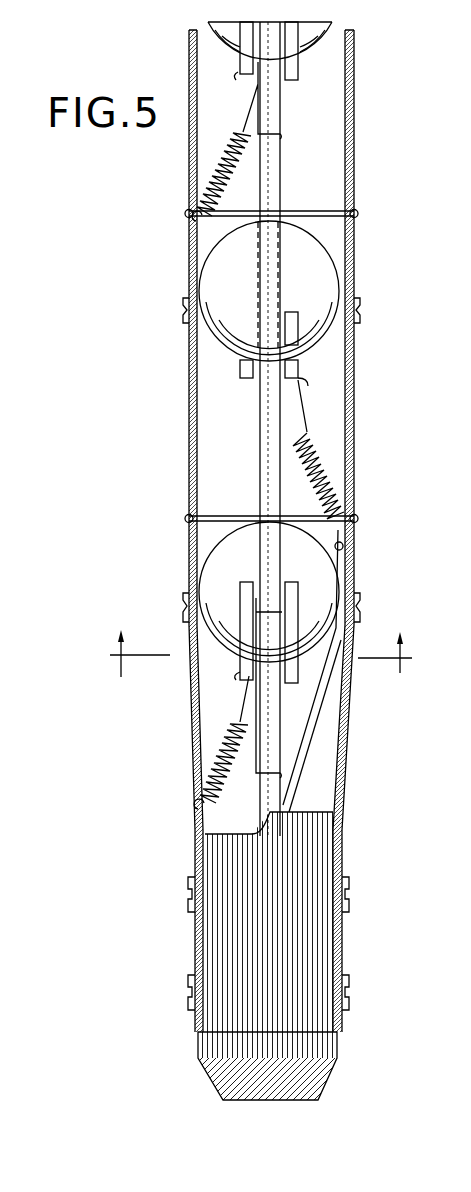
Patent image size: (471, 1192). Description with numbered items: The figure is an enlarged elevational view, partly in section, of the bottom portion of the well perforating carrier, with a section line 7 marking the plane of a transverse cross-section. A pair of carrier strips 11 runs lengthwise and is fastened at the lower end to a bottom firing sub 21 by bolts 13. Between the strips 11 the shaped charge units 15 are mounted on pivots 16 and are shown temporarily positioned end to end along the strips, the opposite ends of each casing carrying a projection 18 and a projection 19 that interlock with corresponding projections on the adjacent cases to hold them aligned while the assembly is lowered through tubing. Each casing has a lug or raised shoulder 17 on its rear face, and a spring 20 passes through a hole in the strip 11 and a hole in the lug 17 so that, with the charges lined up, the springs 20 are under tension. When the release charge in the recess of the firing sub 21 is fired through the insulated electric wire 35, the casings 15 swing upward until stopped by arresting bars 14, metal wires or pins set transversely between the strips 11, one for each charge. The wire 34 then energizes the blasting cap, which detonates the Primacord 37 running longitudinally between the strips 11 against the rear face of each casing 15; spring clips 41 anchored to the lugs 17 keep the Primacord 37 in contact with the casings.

The section line 7 is at (261, 653).
The carrier strips 11 is at (354, 125).
The bolts 13 is at (188, 906).
The arresting bars 14 is at (325, 212).
The shaped charge units 15 is at (300, 47).
The pivots 16 is at (360, 316).
The lug or raised shoulder 17 is at (298, 75).
The projection 18 is at (295, 333).
The projection 19 is at (300, 590).
The springs 20 is at (208, 176).
The bottom firing sub 21 is at (235, 955).
The wire 34 is at (303, 769).
The insulated electric wire 35 is at (306, 728).
The Primacord 37 is at (266, 458).
The spring clips 41 is at (262, 118).